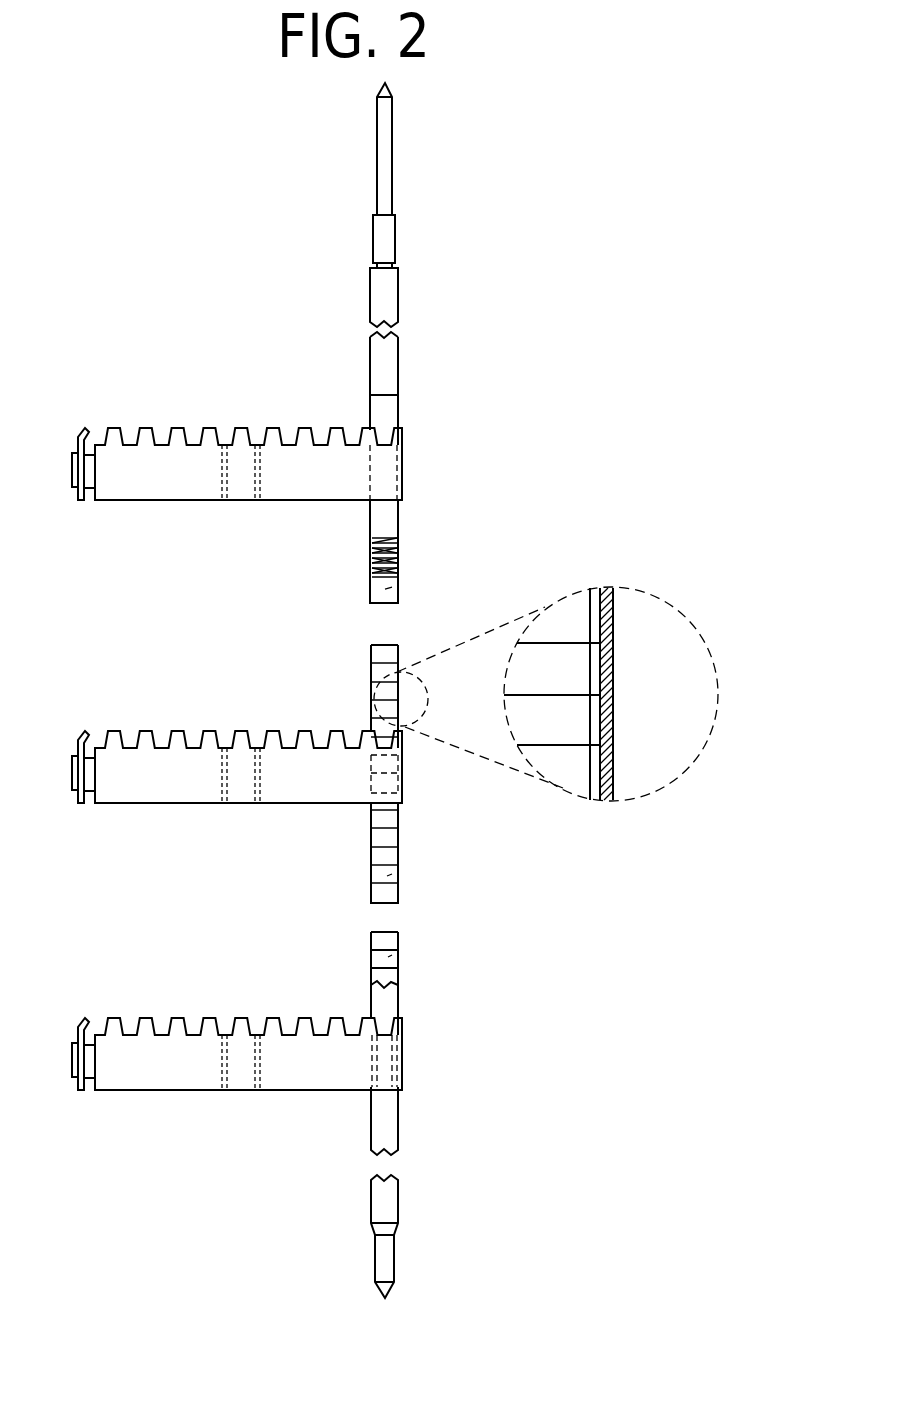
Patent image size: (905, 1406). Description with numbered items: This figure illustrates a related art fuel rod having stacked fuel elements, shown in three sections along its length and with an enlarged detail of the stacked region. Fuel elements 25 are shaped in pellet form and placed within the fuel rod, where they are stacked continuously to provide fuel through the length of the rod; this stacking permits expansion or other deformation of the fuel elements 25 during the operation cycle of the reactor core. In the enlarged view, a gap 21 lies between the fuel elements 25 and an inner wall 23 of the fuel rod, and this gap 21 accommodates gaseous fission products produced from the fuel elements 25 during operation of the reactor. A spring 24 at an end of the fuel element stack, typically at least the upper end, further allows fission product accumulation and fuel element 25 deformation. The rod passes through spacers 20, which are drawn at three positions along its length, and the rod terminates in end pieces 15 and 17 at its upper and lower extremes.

The upper pin tip 15 is at (377, 153).
The lower pin tip 17 is at (372, 1262).
The spacer 20 is at (177, 486).
The gap 21 is at (593, 673).
The inner wall 23 is at (607, 656).
The spring 24 is at (372, 552).
The fuel element 25 is at (383, 590).